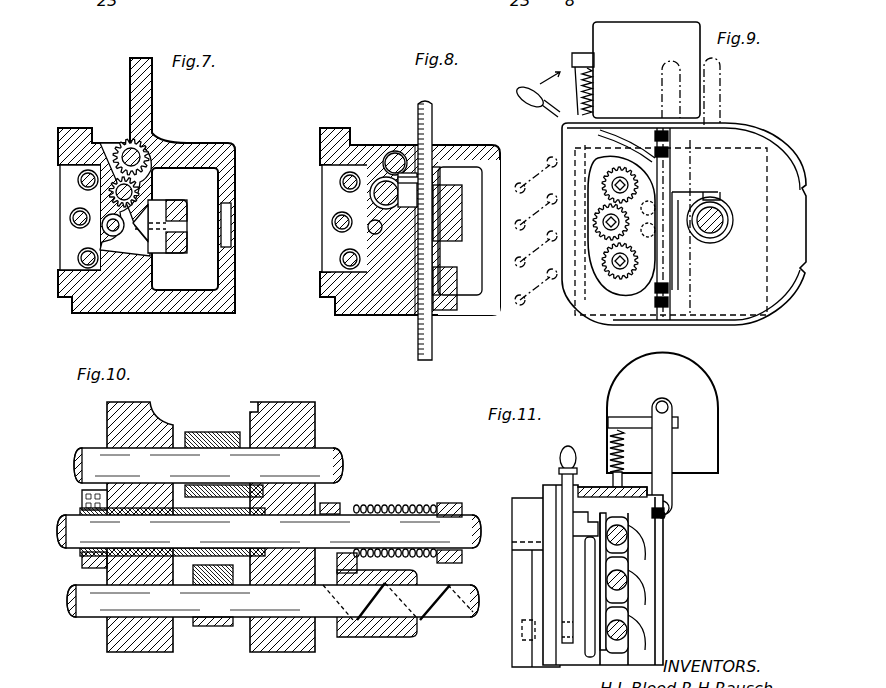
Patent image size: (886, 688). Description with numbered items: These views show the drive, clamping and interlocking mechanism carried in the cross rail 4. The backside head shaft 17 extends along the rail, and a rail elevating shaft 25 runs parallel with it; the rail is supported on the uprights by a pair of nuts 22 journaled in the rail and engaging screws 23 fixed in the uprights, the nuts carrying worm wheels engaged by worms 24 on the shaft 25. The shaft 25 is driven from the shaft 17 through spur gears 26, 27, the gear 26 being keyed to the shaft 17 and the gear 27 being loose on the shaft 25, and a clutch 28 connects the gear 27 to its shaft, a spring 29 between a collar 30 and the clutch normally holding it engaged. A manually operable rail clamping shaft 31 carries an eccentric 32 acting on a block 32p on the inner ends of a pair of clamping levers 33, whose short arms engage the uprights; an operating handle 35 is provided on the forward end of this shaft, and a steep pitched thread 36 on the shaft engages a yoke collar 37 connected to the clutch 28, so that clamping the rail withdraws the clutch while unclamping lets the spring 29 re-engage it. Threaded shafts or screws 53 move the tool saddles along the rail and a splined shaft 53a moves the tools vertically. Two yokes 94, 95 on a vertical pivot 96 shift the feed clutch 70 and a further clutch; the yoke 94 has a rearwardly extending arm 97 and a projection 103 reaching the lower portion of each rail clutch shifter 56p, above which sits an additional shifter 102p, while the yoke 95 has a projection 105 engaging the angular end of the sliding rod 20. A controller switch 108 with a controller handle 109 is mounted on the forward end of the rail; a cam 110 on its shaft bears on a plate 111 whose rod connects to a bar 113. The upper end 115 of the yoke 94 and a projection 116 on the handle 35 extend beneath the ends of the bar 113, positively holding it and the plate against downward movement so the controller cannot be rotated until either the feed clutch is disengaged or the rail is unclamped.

In FIG. 7, the cross rail 4 is at (300, 137).
In FIG. 8, the cross rail 4 is at (320, 140).
In FIG. 8, the backside head shaft 17 is at (395, 151).
In FIG. 10, the backside head shaft 17 is at (74, 465).
In FIG. 11, the sliding rod 20 is at (512, 548).
In FIG. 8, the nuts 22 is at (446, 240).
In FIG. 8, the screws 23 is at (418, 108).
In FIG. 8, the worms 24 is at (373, 193).
In FIG. 10, the rail elevating shaft 25 is at (57, 531).
In FIG. 7, the spur gear 26 is at (128, 142).
In FIG. 10, the spur gear 26 is at (203, 432).
In FIG. 7, the spur gear 27 is at (140, 190).
In FIG. 10, the spur gear 27 is at (187, 586).
In FIG. 10, the clutch 28 is at (345, 504).
In FIG. 10, the spring 29 is at (405, 504).
In FIG. 10, the collar 30 is at (462, 504).
In FIG. 10, the rail clamping shaft 31 is at (67, 601).
In FIG. 11, the rail clamping shaft 31 is at (522, 632).
In FIG. 7, the eccentric 32 is at (103, 228).
In FIG. 10, the eccentric 32 is at (212, 627).
In FIG. 7, the block 32p is at (158, 253).
In FIG. 7, the clamping levers 33 is at (187, 242).
In FIG. 9, the operating handle 35 is at (540, 104).
In FIG. 11, the operating handle 35 is at (559, 460).
In FIG. 10, the steep pitched thread 36 is at (340, 620).
In FIG. 10, the yoke collar 37 is at (383, 637).
In FIG. 7, the threaded shafts or screws 53 is at (77, 180).
In FIG. 8, the threaded shafts or screws 53 is at (346, 220).
In FIG. 7, the splined shaft 53a is at (69, 218).
In FIG. 11, the rail clutch shifters 56p is at (626, 628).
In FIG. 9, the feed clutch 70 is at (728, 232).
In FIG. 9, the yoke 94 is at (605, 285).
In FIG. 11, the yoke 94 is at (660, 605).
In FIG. 11, the yoke 95 is at (590, 598).
In FIG. 9, the vertical pivot 96 is at (678, 262).
In FIG. 9, the rearwardly extending arm 97 is at (717, 192).
In FIG. 11, the additional shifter 102p is at (630, 540).
In FIG. 11, the projection 103 is at (636, 575).
In FIG. 11, the projection 105 is at (572, 534).
In FIG. 9, the controller switch 108 is at (647, 27).
In FIG. 11, the controller switch 108 is at (690, 368).
In FIG. 11, the controller handle 109 is at (672, 450).
In FIG. 11, the cam 110 is at (668, 408).
In FIG. 11, the plate 111 is at (622, 417).
In FIG. 11, the bar 113 is at (665, 517).
In FIG. 11, the upper end of yoke 94 115 is at (664, 520).
In FIG. 11, the projection 116 is at (578, 517).